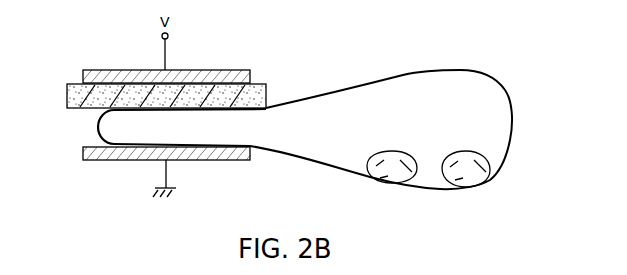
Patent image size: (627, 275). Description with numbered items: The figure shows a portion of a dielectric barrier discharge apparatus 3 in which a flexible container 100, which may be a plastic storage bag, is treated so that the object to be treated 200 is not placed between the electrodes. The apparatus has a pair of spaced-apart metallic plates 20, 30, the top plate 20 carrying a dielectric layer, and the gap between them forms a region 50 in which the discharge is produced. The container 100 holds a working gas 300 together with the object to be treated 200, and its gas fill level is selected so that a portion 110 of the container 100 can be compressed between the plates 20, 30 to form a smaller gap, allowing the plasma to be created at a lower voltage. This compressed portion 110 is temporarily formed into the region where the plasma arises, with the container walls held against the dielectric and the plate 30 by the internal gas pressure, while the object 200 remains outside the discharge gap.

The DBD apparatus 3 is at (407, 28).
The first plate 20 is at (200, 70).
The second plate 30 is at (97, 162).
The region 50 is at (86, 136).
The container 100 is at (492, 172).
The portion of the container 110 is at (228, 131).
The object to be treated 200 is at (391, 151).
The working gas 300 is at (306, 122).